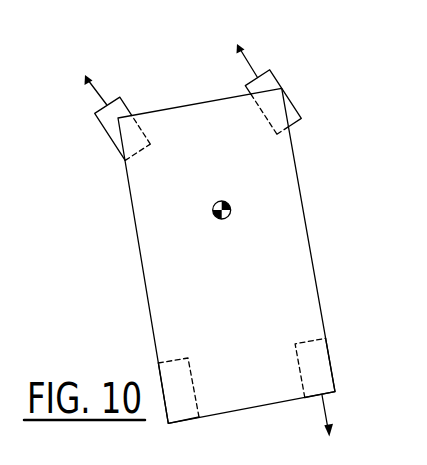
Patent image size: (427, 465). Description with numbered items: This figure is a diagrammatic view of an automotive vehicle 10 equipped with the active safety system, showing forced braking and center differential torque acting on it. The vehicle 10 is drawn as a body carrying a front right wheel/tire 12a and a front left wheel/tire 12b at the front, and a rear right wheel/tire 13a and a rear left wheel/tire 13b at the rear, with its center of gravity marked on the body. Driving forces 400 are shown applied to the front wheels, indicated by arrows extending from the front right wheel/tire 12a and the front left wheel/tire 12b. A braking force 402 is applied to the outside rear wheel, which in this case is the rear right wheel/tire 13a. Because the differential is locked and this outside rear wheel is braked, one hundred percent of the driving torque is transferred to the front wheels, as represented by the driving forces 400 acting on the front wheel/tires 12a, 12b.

The automotive vehicle 10 is at (305, 223).
The front right wheel/tire 12a is at (275, 73).
The front left wheel/tire 12b is at (127, 100).
The rear right wheel/tire 13a is at (320, 347).
The rear left wheel/tire 13b is at (168, 373).
The driving forces 400 is at (246, 67).
The braking force 402 is at (323, 410).